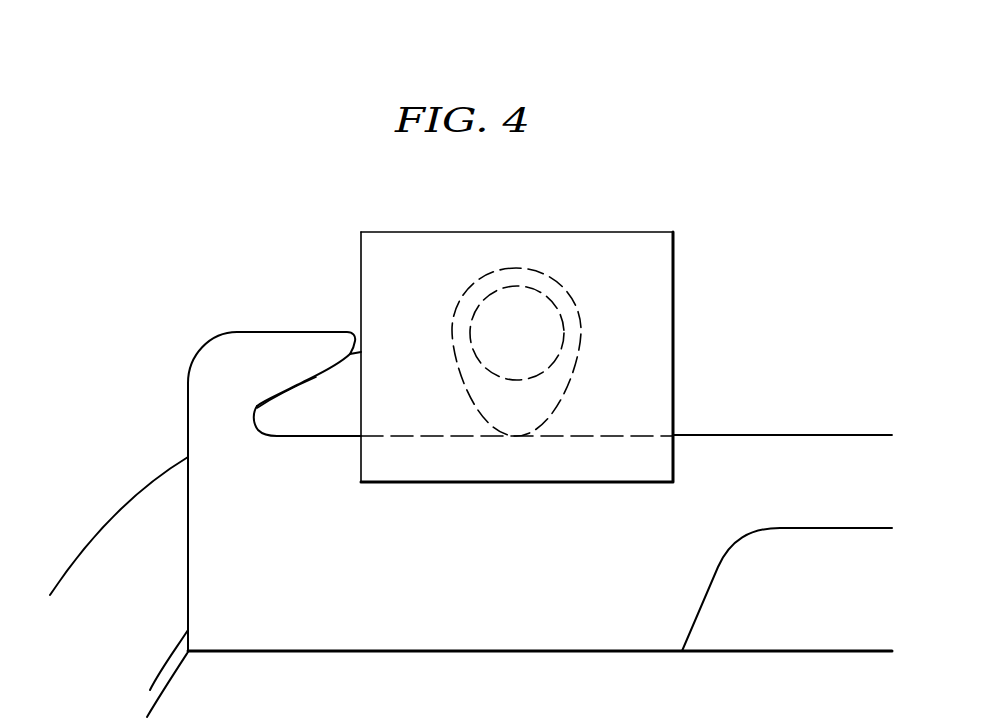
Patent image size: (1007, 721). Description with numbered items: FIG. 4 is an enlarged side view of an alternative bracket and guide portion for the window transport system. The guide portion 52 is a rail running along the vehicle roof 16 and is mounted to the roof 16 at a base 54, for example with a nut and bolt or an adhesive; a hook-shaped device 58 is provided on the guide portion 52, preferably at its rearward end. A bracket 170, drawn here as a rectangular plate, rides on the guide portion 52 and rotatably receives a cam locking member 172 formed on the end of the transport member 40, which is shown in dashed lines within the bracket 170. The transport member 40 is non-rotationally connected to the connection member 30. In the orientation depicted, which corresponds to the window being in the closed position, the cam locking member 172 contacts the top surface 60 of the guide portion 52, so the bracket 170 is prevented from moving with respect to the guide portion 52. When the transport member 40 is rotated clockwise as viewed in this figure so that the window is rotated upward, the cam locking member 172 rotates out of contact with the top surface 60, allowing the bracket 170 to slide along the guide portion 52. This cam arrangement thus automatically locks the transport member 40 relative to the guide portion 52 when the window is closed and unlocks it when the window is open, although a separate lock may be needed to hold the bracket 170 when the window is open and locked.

The roof 16 is at (846, 643).
The connection member 30 is at (113, 547).
The transport member 40 is at (531, 278).
The guide portion 52 is at (822, 457).
The base 54 is at (682, 608).
The device 58 is at (302, 350).
The top surface 60 is at (706, 430).
The bracket 170 is at (682, 315).
The cam locking member 172 is at (565, 398).